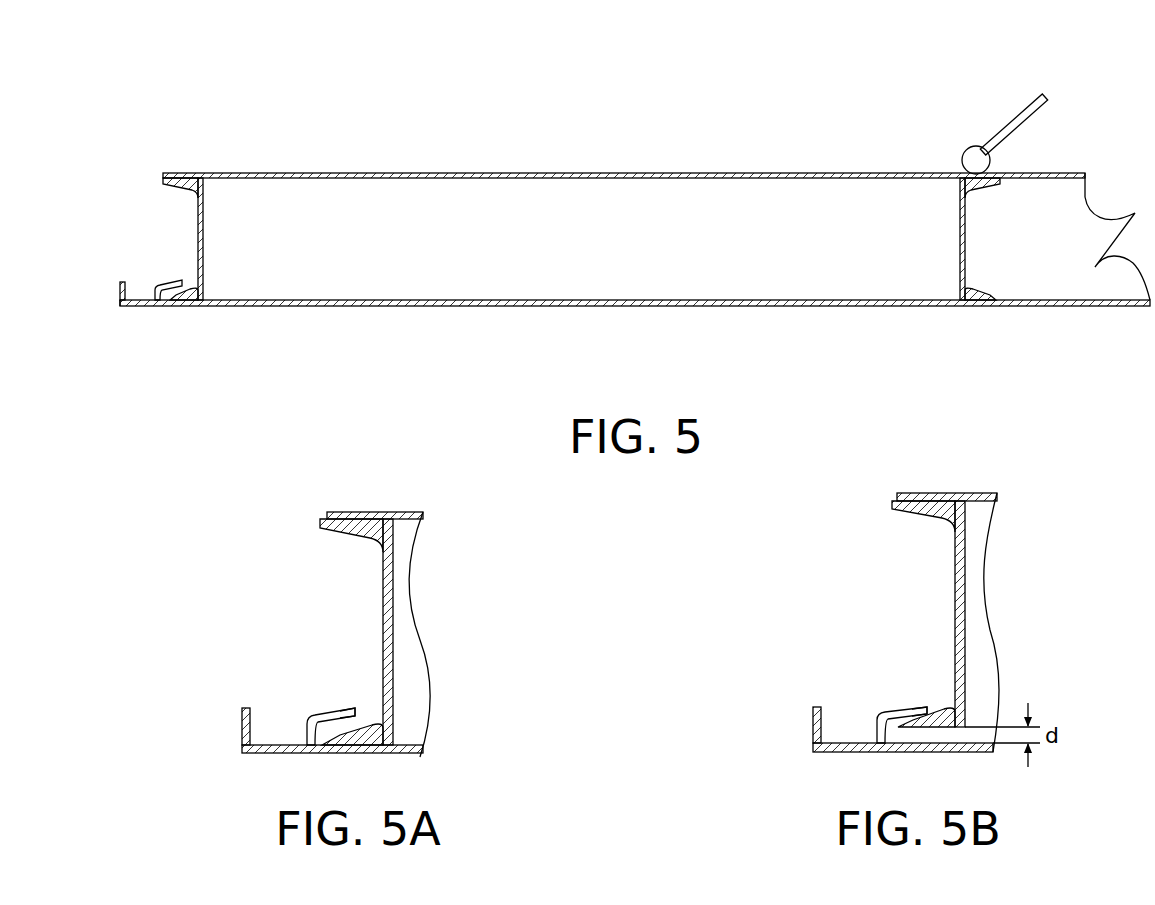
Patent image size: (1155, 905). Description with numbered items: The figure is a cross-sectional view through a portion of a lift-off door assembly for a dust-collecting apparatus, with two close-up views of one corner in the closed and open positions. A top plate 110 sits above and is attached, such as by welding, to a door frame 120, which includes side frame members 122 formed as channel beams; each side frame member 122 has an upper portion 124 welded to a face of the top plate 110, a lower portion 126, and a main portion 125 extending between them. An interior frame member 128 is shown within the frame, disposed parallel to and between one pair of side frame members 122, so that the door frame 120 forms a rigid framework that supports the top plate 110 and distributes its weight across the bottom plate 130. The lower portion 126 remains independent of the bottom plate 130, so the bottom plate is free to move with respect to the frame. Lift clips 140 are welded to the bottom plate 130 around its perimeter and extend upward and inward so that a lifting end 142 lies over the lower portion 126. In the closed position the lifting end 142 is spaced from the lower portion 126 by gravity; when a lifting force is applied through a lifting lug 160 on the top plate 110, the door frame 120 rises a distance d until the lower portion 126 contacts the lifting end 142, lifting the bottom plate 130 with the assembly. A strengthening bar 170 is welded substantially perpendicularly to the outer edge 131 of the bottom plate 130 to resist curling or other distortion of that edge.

In FIG. 5, the top plate 110 is at (385, 172).
In FIG. 5A, the top plate 110 is at (378, 512).
In FIG. 5B, the top plate 110 is at (955, 493).
In FIG. 5, the door frame 120 is at (188, 202).
In FIG. 5, the side frame member 122 is at (196, 245).
In FIG. 5A, the side frame member 122 is at (338, 548).
In FIG. 5B, the side frame member 122 is at (937, 547).
In FIG. 5A, the upper portion 124 is at (357, 525).
In FIG. 5B, the upper portion 124 is at (930, 510).
In FIG. 5A, the main portion 125 is at (390, 647).
In FIG. 5B, the main portion 125 is at (960, 647).
In FIG. 5A, the lower portion 126 is at (345, 735).
In FIG. 5B, the lower portion 126 is at (922, 720).
In FIG. 5, the interior frame member 128 is at (960, 236).
In FIG. 5, the bottom plate 130 is at (510, 307).
In FIG. 5A, the bottom plate 130 is at (345, 753).
In FIG. 5B, the bottom plate 130 is at (905, 752).
In FIG. 5, the outer edge 131 is at (118, 307).
In FIG. 5, the lift clip 140 is at (164, 282).
In FIG. 5A, the lift clip 140 is at (303, 722).
In FIG. 5B, the lift clip 140 is at (875, 718).
In FIG. 5A, the lifting end 142 is at (342, 713).
In FIG. 5B, the lifting end 142 is at (915, 712).
In FIG. 5, the lifting lug 160 is at (977, 142).
In FIG. 5, the strengthening bar 170 is at (118, 290).